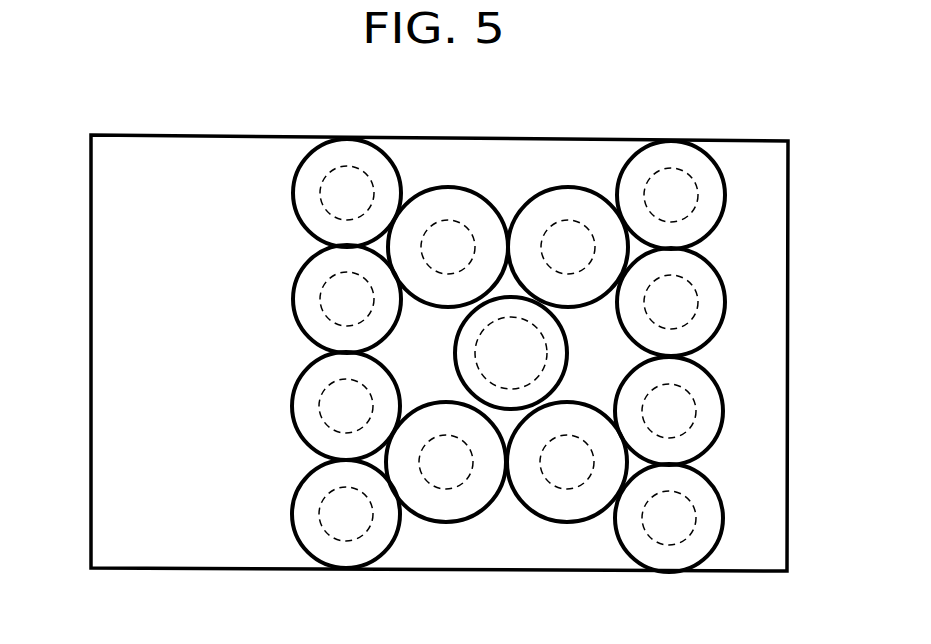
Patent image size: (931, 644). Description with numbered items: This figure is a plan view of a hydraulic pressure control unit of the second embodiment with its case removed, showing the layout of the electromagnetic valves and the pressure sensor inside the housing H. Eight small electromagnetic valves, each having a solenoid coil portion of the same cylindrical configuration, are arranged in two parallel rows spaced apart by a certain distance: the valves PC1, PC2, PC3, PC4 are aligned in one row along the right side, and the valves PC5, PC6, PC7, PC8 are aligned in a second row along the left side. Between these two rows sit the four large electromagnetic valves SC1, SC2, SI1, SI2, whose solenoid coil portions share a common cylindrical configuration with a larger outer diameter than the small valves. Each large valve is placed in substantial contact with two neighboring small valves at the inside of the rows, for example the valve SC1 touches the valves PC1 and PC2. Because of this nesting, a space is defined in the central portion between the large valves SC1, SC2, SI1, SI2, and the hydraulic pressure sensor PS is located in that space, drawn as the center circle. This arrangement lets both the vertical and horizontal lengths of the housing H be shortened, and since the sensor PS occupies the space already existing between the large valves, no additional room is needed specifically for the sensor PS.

The housing H is at (143, 555).
The electromagnetic valve PC1 is at (682, 553).
The electromagnetic valve PC2 is at (707, 422).
The electromagnetic valve PC3 is at (707, 280).
The electromagnetic valve PC4 is at (680, 157).
The electromagnetic valve PC5 is at (320, 542).
The electromagnetic valve PC6 is at (308, 417).
The electromagnetic valve PC7 is at (308, 275).
The electromagnetic valve PC8 is at (327, 158).
The electromagnetic valve SI1 is at (438, 493).
The electromagnetic valve SI2 is at (440, 203).
The electromagnetic valve SC1 is at (568, 493).
The electromagnetic valve SC2 is at (572, 205).
The hydraulic pressure sensor PS is at (515, 397).